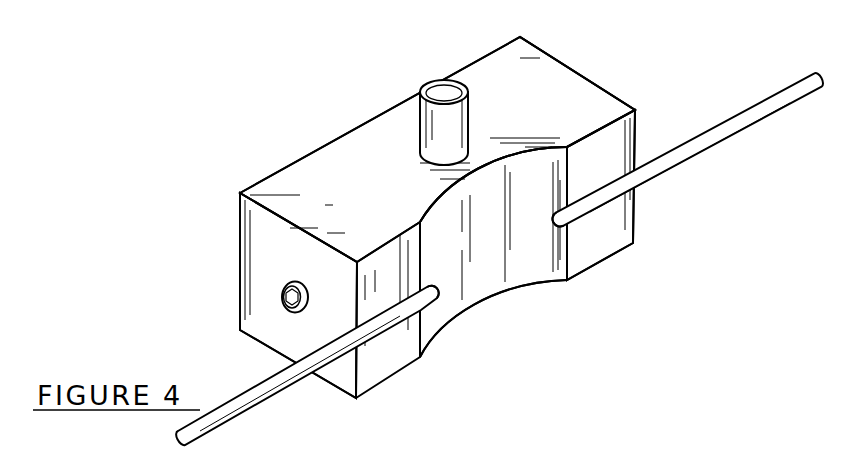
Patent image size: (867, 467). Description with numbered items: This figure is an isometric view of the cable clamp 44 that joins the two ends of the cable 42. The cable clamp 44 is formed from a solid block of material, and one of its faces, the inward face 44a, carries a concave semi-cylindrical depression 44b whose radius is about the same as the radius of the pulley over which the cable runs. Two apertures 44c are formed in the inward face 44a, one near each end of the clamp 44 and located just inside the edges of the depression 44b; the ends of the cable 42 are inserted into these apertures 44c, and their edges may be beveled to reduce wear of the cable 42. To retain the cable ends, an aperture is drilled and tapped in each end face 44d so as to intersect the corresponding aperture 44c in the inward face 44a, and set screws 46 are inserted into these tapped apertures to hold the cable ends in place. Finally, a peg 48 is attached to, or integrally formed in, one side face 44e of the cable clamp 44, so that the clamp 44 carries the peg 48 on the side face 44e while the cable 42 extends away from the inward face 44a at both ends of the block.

The cable 42 is at (280, 391).
The cable clamp 44 is at (403, 98).
The inward face 44a is at (600, 247).
The concave semi-cylindrical depression 44b is at (513, 277).
The apertures 44c is at (567, 210).
The end face 44d is at (257, 253).
The side face 44e is at (328, 167).
The set screws 46 is at (282, 302).
The peg 48 is at (441, 92).